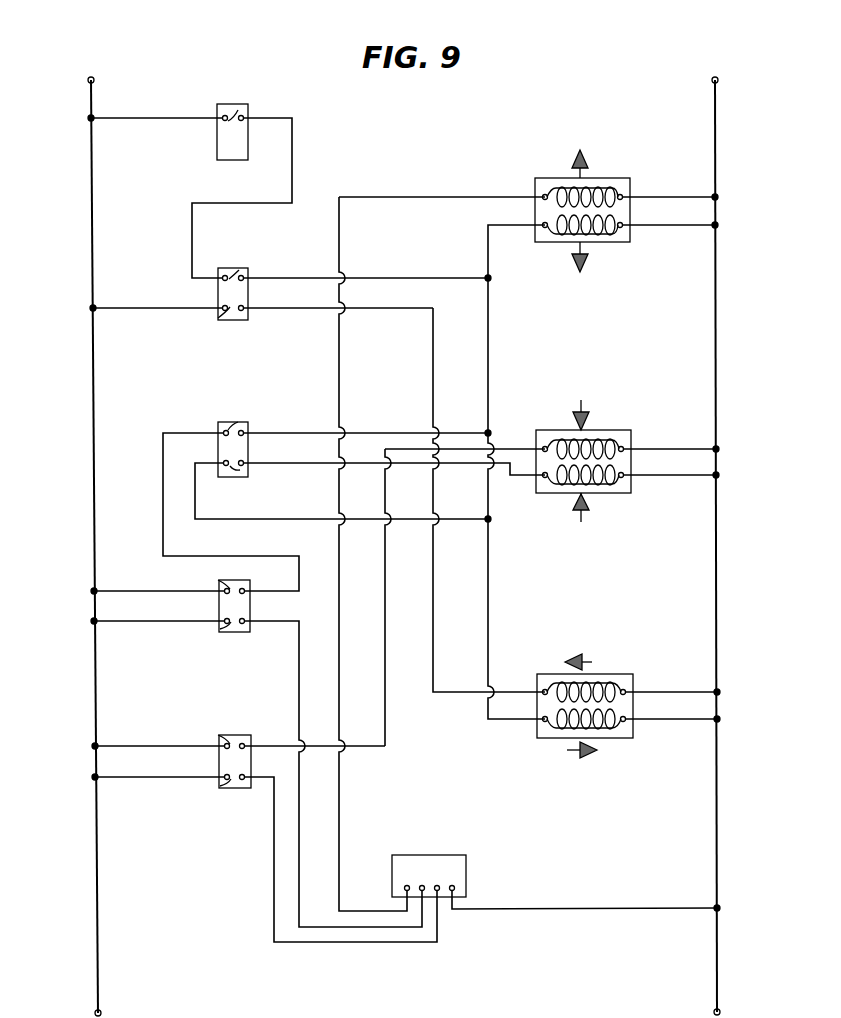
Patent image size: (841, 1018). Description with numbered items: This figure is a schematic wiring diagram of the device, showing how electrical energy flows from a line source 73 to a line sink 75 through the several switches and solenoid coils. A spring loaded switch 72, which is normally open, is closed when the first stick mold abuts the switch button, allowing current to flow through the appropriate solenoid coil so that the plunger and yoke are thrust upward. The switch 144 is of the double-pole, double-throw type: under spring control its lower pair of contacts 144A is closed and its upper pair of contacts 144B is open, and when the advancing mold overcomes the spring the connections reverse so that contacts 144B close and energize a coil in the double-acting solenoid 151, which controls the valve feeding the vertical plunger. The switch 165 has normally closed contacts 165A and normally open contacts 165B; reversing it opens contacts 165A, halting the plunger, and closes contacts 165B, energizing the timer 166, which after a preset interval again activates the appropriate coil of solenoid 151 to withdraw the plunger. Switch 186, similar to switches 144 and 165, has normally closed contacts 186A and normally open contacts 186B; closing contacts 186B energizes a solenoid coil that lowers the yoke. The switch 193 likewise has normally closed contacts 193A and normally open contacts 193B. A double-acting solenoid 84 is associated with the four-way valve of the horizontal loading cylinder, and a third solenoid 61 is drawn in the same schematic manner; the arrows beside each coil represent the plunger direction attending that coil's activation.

The line source 73 is at (90, 100).
The line sink 75 is at (718, 333).
The spring loaded switch 72 is at (231, 122).
The switch 193 is at (290, 295).
The contacts 193A is at (243, 275).
The contacts 193B is at (226, 318).
The switch 144 is at (354, 497).
The lower pair of contacts 144A is at (243, 476).
The upper pair of contacts 144B is at (238, 424).
The switch 165 is at (258, 745).
The normally closed contacts 165A is at (224, 586).
The normally open contacts 165B is at (226, 628).
The switch 186 is at (266, 830).
The contacts 186A is at (228, 784).
The contacts 186B is at (226, 744).
The double-acting solenoid 151 is at (613, 180).
The solenoid valve coil 61 is at (613, 432).
The double-acting solenoid 84 is at (612, 676).
The timer 166 is at (456, 849).